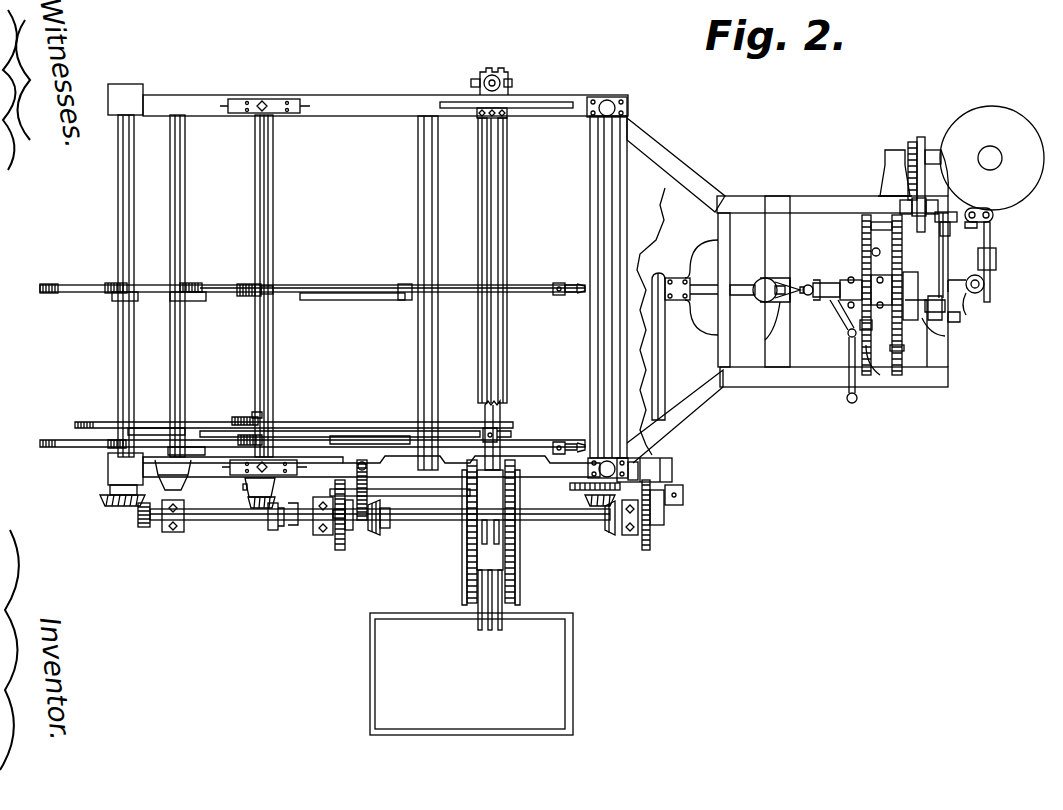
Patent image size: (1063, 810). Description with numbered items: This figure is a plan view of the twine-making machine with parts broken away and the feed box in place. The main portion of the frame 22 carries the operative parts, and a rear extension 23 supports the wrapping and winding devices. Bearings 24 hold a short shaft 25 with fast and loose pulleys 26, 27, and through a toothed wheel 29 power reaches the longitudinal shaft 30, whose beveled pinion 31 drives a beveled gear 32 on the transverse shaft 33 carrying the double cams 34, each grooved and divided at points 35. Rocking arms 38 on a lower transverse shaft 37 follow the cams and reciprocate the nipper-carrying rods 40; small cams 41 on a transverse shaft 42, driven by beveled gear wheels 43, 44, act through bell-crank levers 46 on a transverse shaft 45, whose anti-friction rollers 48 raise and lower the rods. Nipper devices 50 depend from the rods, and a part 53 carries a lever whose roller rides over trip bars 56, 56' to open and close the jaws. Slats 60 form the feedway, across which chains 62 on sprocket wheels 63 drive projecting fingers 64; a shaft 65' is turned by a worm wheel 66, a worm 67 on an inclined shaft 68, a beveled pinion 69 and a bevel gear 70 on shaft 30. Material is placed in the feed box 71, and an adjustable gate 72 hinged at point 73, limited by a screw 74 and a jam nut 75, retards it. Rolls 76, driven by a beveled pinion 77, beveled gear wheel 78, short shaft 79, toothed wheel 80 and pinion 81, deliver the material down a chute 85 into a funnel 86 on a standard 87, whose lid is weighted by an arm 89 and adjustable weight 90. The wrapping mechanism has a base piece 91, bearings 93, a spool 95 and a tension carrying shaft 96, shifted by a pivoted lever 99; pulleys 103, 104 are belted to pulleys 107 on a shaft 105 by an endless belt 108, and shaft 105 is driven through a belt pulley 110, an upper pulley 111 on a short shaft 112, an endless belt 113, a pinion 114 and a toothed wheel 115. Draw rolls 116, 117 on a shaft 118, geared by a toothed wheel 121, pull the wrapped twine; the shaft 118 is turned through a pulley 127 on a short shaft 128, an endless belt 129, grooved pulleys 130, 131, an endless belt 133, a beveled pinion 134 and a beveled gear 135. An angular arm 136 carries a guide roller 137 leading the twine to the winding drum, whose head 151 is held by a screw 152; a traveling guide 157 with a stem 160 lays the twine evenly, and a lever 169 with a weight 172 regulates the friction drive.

The main portion of the frame 22 is at (378, 106).
The rear extension 23 is at (790, 386).
The bearings 24 is at (243, 488).
The short shaft 25 is at (245, 484).
The fast pulley 26 is at (292, 526).
The loose pulley 27 is at (318, 536).
The toothed wheel 29 is at (339, 520).
The longitudinal shaft 30 is at (215, 521).
The beveled pinion 31 is at (144, 528).
The beveled gear 32 is at (100, 500).
The transverse shaft 33 is at (118, 364).
The double cams 34 is at (64, 292).
The points 35 is at (114, 293).
The lower transverse shaft 37 is at (170, 372).
The rocking arms 38 is at (190, 301).
The nipper-carrying rod 40 is at (312, 282).
The small cams 41 is at (247, 297).
The transverse shaft 42 is at (255, 358).
The beveled gear wheel 43 is at (272, 531).
The beveled gear wheel 44 is at (255, 509).
The transverse shaft 45 is at (273, 351).
The bell-crank levers 46 is at (362, 300).
The anti-friction roller 48 is at (402, 286).
The nipper devices 50 is at (578, 294).
The part 53 is at (556, 296).
The trip bar 56 is at (416, 293).
The trip bar 56' is at (512, 424).
The slats 60 is at (498, 226).
The chains 62 is at (467, 540).
The sprocket wheels 63 is at (465, 499).
The projecting fingers 64 is at (478, 602).
The shaft 65' is at (400, 498).
The worm wheel 66 is at (347, 522).
The worm 67 is at (351, 487).
The inclined shaft 68 is at (332, 436).
The beveled pinion 69 is at (349, 532).
The bevel gear 70 is at (381, 532).
The feed box 71 is at (573, 636).
The adjustable gate 72 is at (492, 69).
The hinge point 73 is at (486, 126).
The screw 74 is at (512, 82).
The jam nut 75 is at (471, 83).
The rolls 76 is at (590, 227).
The beveled pinion 77 is at (625, 540).
The beveled gear wheel 78 is at (605, 522).
The short shaft 79 is at (585, 500).
The toothed wheel 80 is at (570, 487).
The pinion 81 is at (636, 466).
The chute 85 is at (656, 208).
The funnel 86 is at (760, 282).
The standard 87 is at (777, 300).
The arm 89 is at (766, 340).
The adjustable weight 90 is at (808, 284).
The base piece 91 is at (838, 306).
The bearings 93 is at (860, 283).
The spool 95 is at (816, 302).
The tension carrying shaft 96 is at (792, 310).
The pivoted lever 99 is at (857, 400).
The pulley 103 is at (870, 328).
The pulley 104 is at (905, 322).
The shaft 105 is at (752, 294).
The belt pulley 107 is at (895, 352).
The endless belt 108 is at (874, 360).
The belt pulley 110 is at (672, 278).
The upper pulley 111 is at (668, 514).
The short shaft 112 is at (683, 495).
The endless belt 113 is at (660, 352).
The pinion 114 is at (668, 460).
The toothed wheel 115 is at (652, 545).
The lower draw roll 116 is at (930, 298).
The upper draw roll 117 is at (924, 314).
The shaft 118 is at (948, 250).
The toothed wheel 121 is at (955, 322).
The pulley 127 is at (908, 146).
The short shaft 128 is at (932, 150).
The endless belt 129 is at (885, 178).
The grooved pulley 130 is at (921, 137).
The grooved pulley 131 is at (883, 238).
The endless belt 133 is at (926, 180).
The beveled pinion 134 is at (938, 202).
The beveled gear 135 is at (950, 208).
The angular arm 136 is at (967, 310).
The guide roller 137 is at (990, 306).
The drum head 151 is at (1030, 134).
The screw 152 is at (1000, 140).
The traveling guide 157 is at (995, 224).
The stem 160 is at (997, 230).
The lever 169 is at (992, 284).
The weight 172 is at (998, 258).